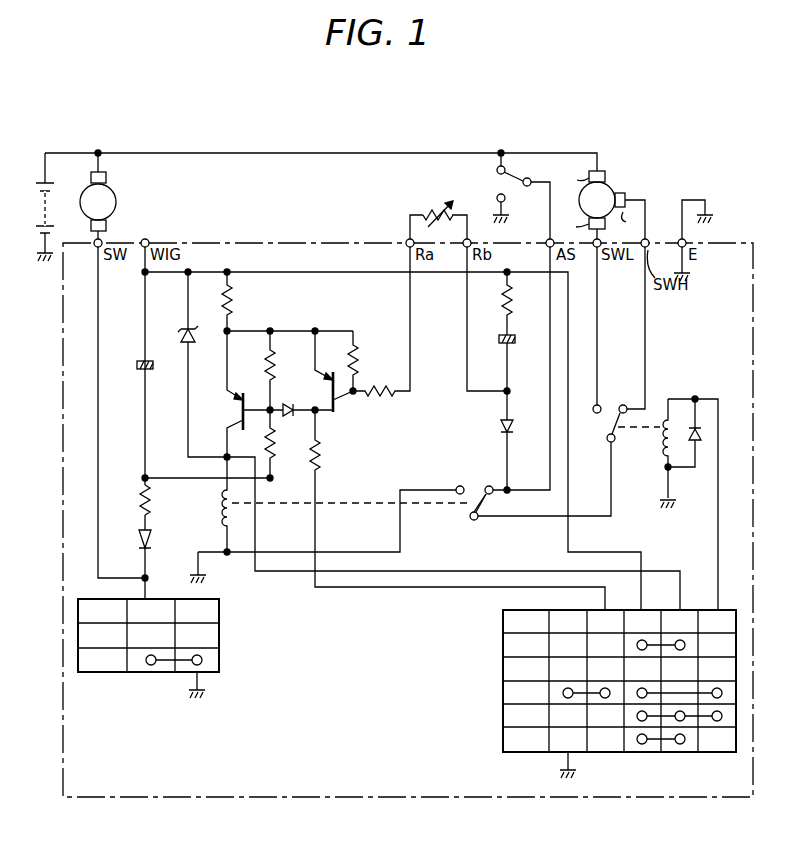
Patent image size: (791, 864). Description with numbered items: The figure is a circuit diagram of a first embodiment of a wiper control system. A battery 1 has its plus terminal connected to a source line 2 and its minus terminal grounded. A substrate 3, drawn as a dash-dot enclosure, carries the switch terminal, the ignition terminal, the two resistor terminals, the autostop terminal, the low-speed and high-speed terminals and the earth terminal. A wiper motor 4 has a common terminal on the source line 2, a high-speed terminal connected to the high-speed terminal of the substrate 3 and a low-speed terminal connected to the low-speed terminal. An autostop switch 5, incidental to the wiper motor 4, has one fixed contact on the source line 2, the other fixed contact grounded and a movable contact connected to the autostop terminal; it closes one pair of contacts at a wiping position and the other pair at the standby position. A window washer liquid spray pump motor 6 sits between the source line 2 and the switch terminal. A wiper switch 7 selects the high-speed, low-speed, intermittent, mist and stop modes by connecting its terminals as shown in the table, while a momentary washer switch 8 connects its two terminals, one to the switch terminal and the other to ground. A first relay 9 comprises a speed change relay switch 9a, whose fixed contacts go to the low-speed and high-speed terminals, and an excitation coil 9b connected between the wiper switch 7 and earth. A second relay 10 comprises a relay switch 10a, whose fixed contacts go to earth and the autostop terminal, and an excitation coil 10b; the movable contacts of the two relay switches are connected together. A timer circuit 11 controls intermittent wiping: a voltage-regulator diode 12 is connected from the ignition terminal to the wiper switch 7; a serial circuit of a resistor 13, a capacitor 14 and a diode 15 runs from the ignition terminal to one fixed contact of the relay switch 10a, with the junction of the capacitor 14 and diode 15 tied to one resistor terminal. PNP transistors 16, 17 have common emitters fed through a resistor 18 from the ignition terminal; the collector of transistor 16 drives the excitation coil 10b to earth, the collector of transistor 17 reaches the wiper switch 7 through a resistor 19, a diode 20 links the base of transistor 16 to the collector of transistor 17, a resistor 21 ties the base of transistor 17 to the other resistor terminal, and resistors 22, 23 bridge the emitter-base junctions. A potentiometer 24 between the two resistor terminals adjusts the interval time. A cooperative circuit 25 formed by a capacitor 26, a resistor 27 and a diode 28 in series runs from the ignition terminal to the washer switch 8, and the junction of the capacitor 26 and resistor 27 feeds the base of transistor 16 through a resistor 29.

The battery 1 is at (35, 187).
The source line 2 is at (215, 153).
The substrate 3 is at (620, 797).
The wiper motor 4 is at (608, 182).
The autostop switch 5 is at (490, 174).
The window washer liquid spray pump motor 6 is at (112, 191).
The wiper switch 7 is at (503, 690).
The washer switch 8 is at (219, 638).
The first relay 9 is at (650, 428).
The speed change relay switch 9a is at (613, 400).
The excitation coil 9b is at (665, 415).
The second relay 10 is at (515, 400).
The relay switch 10a is at (472, 483).
The excitation coil 10b is at (222, 512).
The timer circuit 11 is at (298, 268).
The voltage-regulator diode 12 is at (181, 338).
The resistor 13 is at (512, 296).
The capacitor 14 is at (518, 340).
The diode 15 is at (514, 436).
The transistor 16 is at (238, 410).
The transistor 17 is at (340, 408).
The resistor 18 is at (233, 300).
The resistor 19 is at (322, 466).
The diode 20 is at (288, 404).
The resistor 21 is at (382, 397).
The resistor 22 is at (265, 370).
The resistor 23 is at (358, 358).
The potentiometer 24 is at (430, 208).
The cooperative circuit 25 is at (187, 421).
The capacitor 26 is at (139, 370).
The resistor 27 is at (140, 502).
The diode 28 is at (139, 541).
The resistor 29 is at (276, 452).